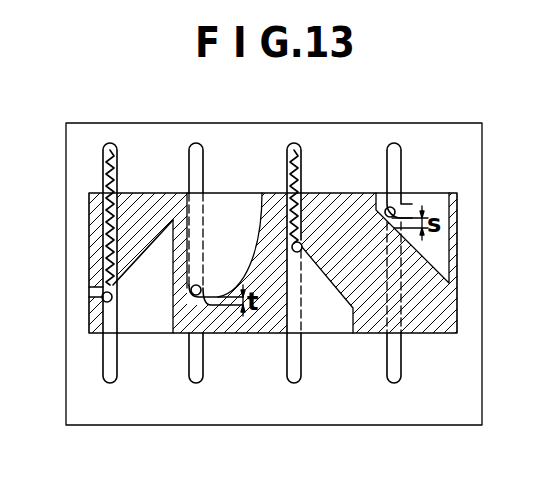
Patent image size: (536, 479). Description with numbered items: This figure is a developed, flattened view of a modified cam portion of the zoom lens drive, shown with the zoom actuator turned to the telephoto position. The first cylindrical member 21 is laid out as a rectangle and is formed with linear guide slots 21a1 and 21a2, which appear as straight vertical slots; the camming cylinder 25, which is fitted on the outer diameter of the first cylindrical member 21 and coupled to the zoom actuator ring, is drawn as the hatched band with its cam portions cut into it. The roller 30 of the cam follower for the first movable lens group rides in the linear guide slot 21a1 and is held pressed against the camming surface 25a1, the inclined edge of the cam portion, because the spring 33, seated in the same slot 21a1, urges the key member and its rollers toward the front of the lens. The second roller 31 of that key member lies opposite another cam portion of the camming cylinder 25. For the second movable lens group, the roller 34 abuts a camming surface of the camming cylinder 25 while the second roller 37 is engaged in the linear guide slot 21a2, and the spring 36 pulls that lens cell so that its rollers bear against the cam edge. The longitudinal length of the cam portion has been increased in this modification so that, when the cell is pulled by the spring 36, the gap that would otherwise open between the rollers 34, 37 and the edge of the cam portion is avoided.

The first cylindrical member 21 is at (262, 412).
The linear guide slot 21a1 is at (103, 374).
The linear guide slot 21a2 is at (396, 162).
The camming cylinder 25 is at (92, 237).
The camming surface 25a1 is at (144, 266).
The roller 30 is at (102, 302).
The second roller 31 is at (197, 298).
The spring 33 is at (116, 160).
The roller 34 is at (302, 242).
The spring 36 is at (302, 162).
The second roller 37 is at (398, 205).